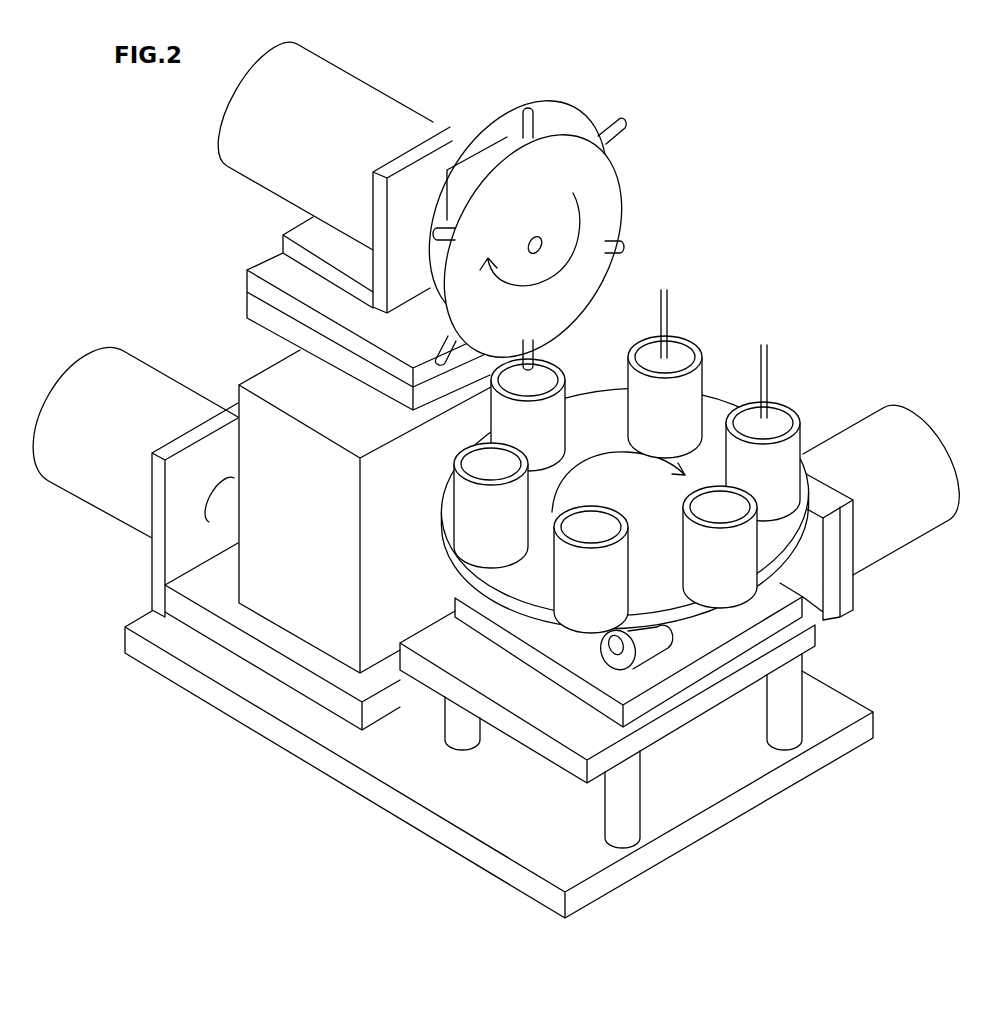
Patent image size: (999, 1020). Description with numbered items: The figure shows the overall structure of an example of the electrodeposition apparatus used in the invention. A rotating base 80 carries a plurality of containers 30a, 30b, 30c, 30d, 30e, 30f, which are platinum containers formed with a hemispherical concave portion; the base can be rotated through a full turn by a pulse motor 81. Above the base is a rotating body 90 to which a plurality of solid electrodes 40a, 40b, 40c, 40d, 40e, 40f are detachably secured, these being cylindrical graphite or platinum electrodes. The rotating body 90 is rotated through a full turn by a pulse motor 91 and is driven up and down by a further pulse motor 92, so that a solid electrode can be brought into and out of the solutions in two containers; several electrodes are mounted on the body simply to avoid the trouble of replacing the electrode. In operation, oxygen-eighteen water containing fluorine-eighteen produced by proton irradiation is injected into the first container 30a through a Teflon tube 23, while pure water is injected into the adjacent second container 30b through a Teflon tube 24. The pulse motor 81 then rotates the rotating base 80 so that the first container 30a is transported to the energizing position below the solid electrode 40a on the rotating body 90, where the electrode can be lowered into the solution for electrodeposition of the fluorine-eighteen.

The first bar 23 is at (770, 350).
The second bar 24 is at (670, 297).
The cup A 30a is at (790, 403).
The cup B 30b is at (698, 380).
The cup C 30c is at (540, 418).
The cup D 30d is at (468, 497).
The cup E 30e is at (562, 580).
The cup F 30f is at (700, 540).
The pin 40a is at (540, 352).
The pin 40b is at (624, 245).
The pin 40c is at (625, 125).
The pin 40d is at (530, 118).
The pin 40e is at (458, 230).
The pin 40f is at (428, 355).
The turntable 80 is at (507, 565).
The turntable motor 81 is at (923, 523).
The rotary disk 90 is at (601, 193).
The disk motor 91 is at (235, 138).
The motor 92 is at (73, 476).